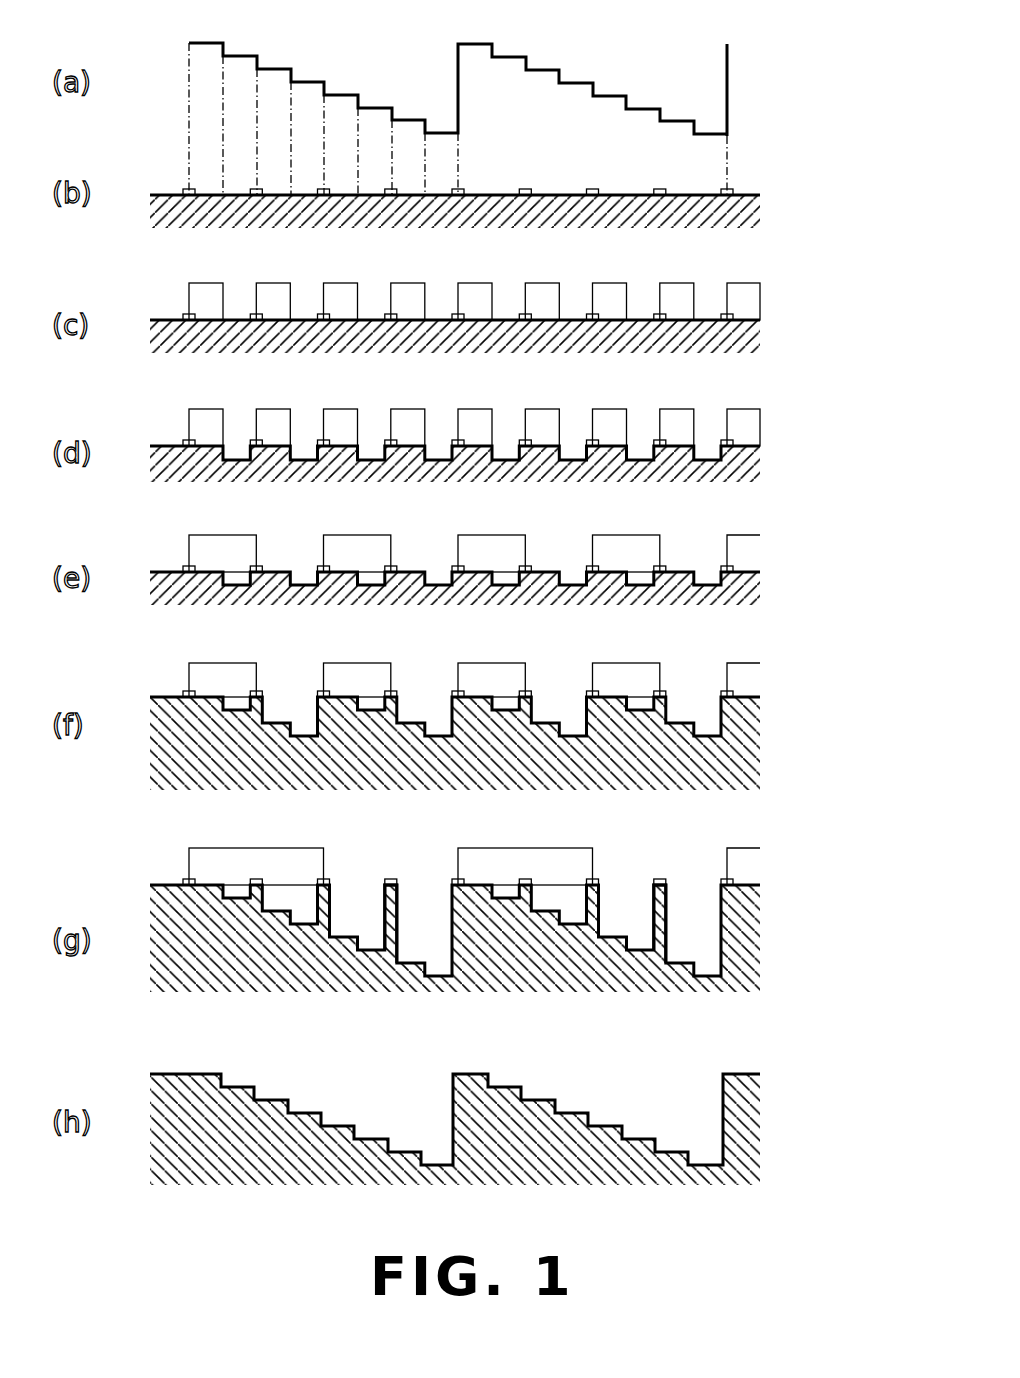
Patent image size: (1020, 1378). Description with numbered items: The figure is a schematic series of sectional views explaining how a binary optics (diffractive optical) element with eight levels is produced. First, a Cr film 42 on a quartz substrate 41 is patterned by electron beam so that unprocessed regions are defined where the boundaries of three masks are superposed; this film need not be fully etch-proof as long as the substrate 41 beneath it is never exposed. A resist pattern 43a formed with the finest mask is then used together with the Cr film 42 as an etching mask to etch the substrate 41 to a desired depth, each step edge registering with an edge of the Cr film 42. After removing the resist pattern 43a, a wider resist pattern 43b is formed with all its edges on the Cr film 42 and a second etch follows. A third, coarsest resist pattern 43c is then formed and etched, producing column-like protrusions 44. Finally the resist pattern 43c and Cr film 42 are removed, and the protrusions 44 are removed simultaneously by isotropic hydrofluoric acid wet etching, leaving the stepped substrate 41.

The quartz substrate 41 is at (755, 218).
The Cr film 42 is at (732, 191).
The resist pattern 43a is at (745, 432).
The resist pattern 43b is at (745, 560).
The resist pattern 43c is at (552, 868).
The protrusions 44 is at (663, 900).